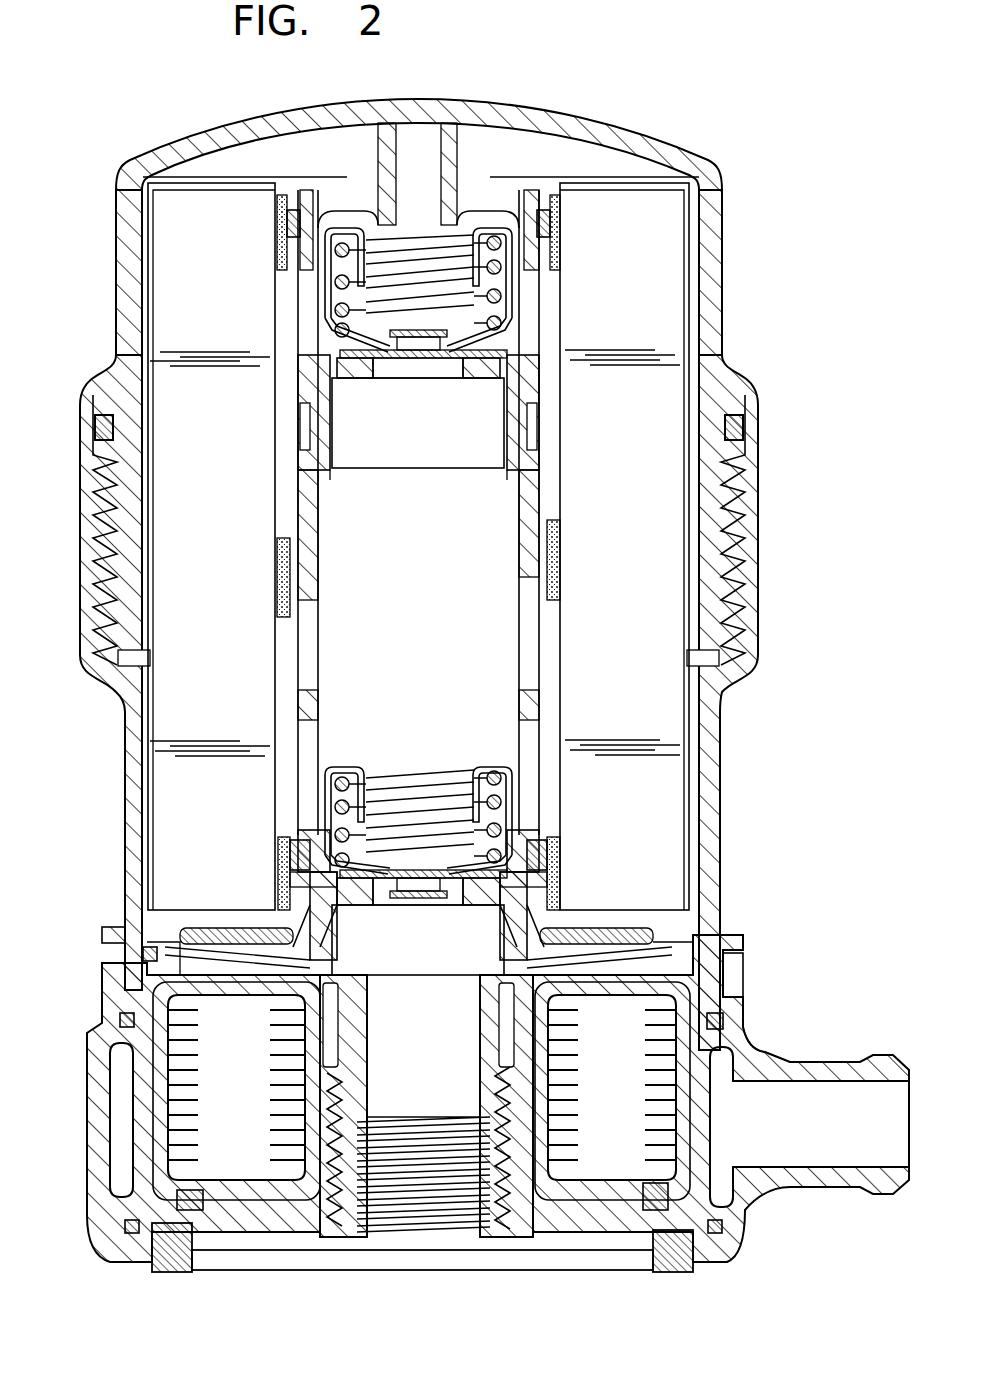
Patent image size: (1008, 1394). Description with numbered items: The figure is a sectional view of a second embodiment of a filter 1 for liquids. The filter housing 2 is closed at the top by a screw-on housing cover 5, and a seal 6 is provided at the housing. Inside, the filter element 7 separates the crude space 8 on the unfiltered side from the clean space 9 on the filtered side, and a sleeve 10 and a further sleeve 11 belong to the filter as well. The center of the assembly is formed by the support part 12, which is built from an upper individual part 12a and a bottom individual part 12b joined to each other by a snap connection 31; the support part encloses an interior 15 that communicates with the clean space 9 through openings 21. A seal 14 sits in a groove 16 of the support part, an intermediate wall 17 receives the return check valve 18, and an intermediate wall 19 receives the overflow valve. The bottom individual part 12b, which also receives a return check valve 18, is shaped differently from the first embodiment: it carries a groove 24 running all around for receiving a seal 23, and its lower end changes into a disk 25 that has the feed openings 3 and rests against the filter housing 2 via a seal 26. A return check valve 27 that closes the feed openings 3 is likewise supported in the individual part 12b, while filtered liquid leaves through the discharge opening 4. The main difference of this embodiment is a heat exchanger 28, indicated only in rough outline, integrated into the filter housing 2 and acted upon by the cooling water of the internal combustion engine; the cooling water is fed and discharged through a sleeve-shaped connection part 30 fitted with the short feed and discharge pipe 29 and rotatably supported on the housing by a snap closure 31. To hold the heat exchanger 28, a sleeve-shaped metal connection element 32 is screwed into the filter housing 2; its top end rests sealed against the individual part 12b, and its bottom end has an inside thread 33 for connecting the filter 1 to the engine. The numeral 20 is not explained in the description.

The filter for liquids 1 is at (105, 740).
The filter housing 2 is at (442, 620).
The feed opening 3 is at (630, 955).
The discharge opening 4 is at (440, 1232).
The screw-on housing cover 5 is at (660, 152).
The seal 6 is at (735, 428).
The filter element 7 is at (672, 712).
The crude space 8 is at (693, 802).
The clean space 9 is at (552, 717).
The sleeve 10 is at (550, 210).
The sleeve 11 is at (558, 582).
The support part 12 is at (518, 593).
The individual part 12a is at (303, 310).
The individual part 12b is at (300, 832).
The seal 14 is at (555, 237).
The interior 15 is at (408, 566).
The groove 16 is at (285, 220).
The intermediate wall 17 is at (282, 885).
The return check valve 18 is at (481, 918).
The intermediate wall 19 is at (505, 348).
The valve disc 20 is at (480, 380).
The openings 21 is at (528, 740).
The seal 23 is at (292, 860).
The groove 24 is at (560, 862).
The disk 25 is at (170, 957).
The seal 26 is at (143, 953).
The return check valve 27 is at (478, 1050).
The heat exchanger 28 is at (183, 1020).
The feed and discharge pipe 29 is at (827, 1177).
The connection part 30 is at (750, 1042).
The snap connection 31 is at (300, 432).
The connection element 32 is at (426, 1146).
The inside thread 33 is at (365, 1205).